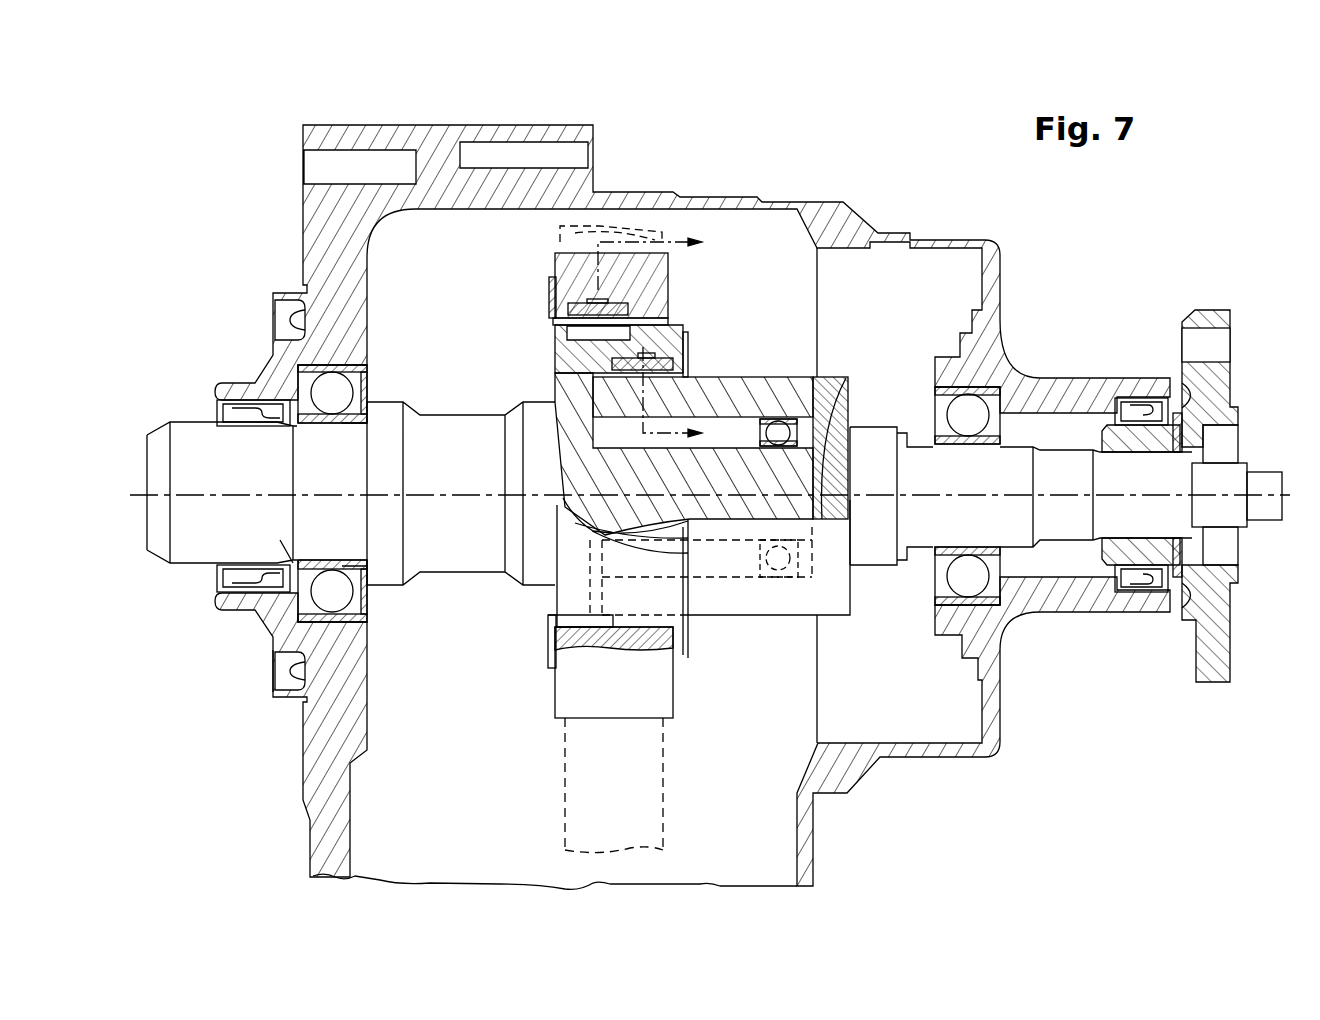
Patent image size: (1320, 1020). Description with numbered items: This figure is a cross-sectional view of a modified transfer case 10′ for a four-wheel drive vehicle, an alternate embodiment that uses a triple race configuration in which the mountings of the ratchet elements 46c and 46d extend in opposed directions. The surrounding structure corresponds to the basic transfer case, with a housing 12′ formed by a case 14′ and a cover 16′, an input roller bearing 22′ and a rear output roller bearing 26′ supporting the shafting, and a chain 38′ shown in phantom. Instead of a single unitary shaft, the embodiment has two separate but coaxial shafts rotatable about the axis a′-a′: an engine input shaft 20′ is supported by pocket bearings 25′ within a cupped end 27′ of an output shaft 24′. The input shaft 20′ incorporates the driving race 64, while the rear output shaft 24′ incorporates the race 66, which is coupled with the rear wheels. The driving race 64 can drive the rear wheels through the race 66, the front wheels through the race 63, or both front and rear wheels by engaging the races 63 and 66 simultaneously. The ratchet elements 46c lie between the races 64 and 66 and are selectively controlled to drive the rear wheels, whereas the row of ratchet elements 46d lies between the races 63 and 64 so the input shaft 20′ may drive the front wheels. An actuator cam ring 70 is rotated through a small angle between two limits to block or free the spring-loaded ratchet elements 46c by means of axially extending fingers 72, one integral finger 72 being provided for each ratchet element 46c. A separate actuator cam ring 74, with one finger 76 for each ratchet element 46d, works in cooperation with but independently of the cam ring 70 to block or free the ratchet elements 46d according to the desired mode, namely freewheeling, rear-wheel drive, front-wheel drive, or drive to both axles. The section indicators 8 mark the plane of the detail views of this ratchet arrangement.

The transfer case 10′ is at (252, 133).
The housing 12′ is at (561, 112).
The front housing portion 14′ is at (442, 136).
The rear housing portion 16′ is at (660, 193).
The engine input shaft 20′ is at (200, 567).
The housing mounting flange 22′ is at (305, 668).
The output shaft 24′ is at (1058, 543).
The pocket bearings 25′ is at (810, 430).
The rear bearing 26′ is at (975, 410).
The cupped end 27′ is at (852, 380).
The gear (hidden) 38′ is at (560, 240).
The ratchet elements 46c is at (635, 305).
The ratchet elements 46d is at (605, 362).
The race 63 is at (562, 268).
The driving race 64 is at (567, 385).
The race 66 is at (770, 380).
The actuator cam ring 70 is at (690, 348).
The fingers 72 is at (683, 410).
The actuator cam ring 74 is at (550, 300).
The finger 76 is at (590, 338).
The section line 8- 8 is at (662, 337).